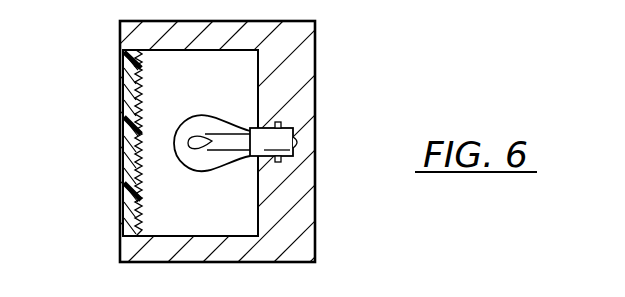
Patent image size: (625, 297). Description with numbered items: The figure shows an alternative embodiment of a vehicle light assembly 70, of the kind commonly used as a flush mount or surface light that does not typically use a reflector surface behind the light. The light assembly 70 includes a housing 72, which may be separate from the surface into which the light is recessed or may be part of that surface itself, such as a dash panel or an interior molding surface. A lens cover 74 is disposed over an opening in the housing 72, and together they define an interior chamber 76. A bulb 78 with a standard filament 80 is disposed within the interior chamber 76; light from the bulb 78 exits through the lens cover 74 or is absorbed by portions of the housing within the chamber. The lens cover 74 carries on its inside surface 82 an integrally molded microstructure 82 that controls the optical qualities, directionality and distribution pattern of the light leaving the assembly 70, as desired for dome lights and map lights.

The vehicle light assembly 70 is at (372, 116).
The housing 72 is at (307, 213).
The lens cover 74 is at (122, 72).
The interior chamber 76 is at (219, 88).
The bulb 78 is at (176, 118).
The filament 80 is at (173, 151).
The inside surface microstructure 82 is at (127, 181).